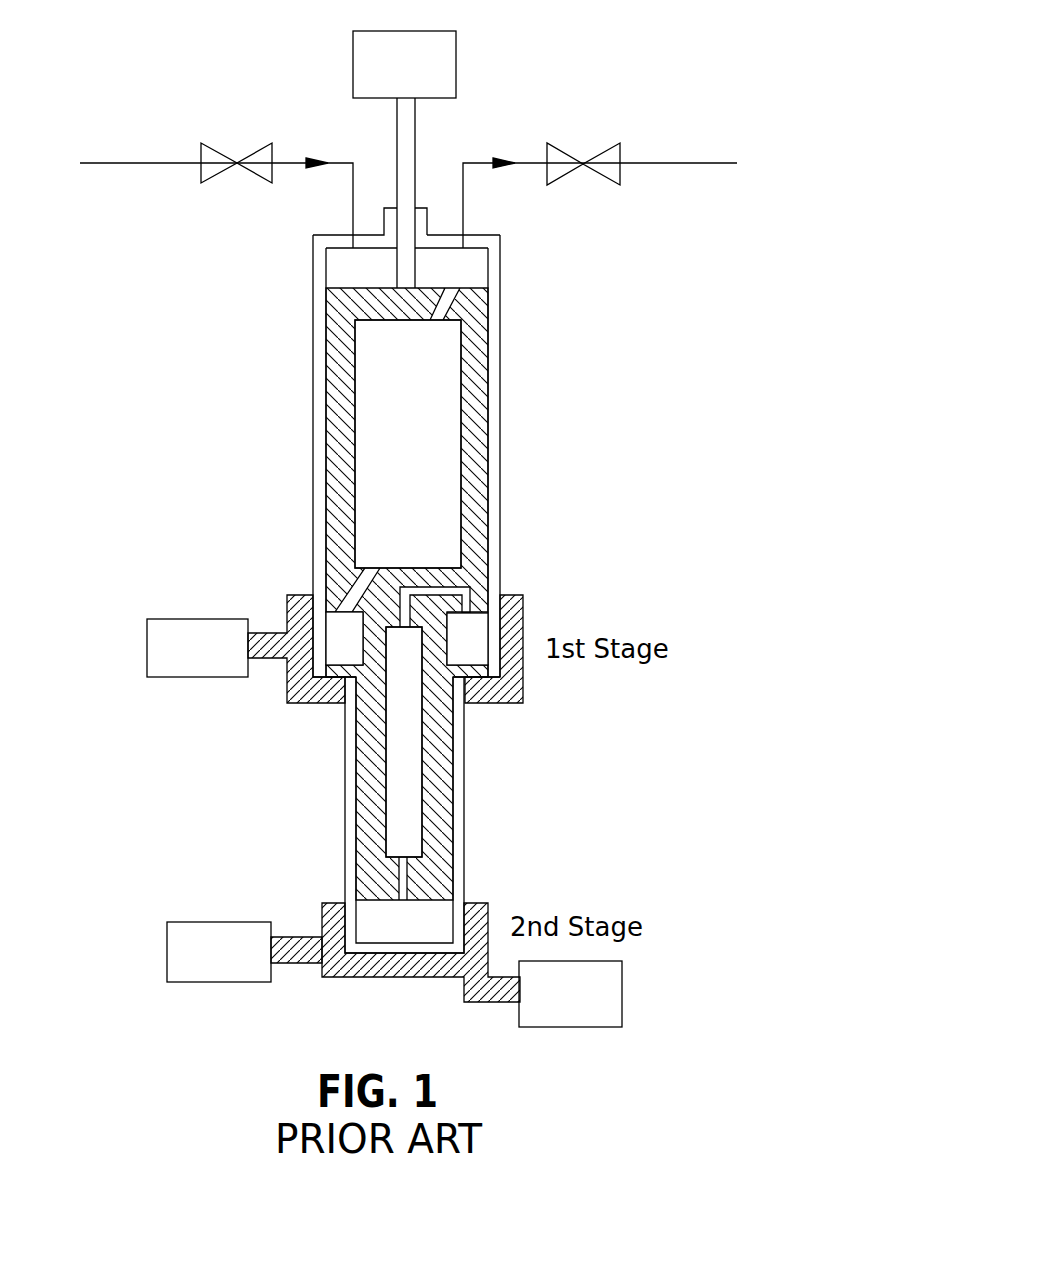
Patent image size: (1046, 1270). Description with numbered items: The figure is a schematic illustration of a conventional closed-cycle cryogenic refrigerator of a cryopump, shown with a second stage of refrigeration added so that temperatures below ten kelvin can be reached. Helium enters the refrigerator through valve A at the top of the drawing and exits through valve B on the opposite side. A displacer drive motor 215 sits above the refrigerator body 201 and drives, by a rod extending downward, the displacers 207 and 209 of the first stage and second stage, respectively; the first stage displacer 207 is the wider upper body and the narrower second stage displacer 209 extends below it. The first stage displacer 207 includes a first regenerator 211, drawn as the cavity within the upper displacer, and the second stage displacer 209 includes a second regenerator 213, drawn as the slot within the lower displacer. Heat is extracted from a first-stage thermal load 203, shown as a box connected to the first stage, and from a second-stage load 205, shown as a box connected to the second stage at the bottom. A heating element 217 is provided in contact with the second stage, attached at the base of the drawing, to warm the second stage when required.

The valve A is at (250, 153).
The valve B is at (604, 148).
The cylinder 201 is at (313, 412).
The first-stage thermal load 203 is at (147, 650).
The second-stage load 205 is at (167, 953).
The first stage displacer 207 is at (489, 402).
The second stage displacer 209 is at (453, 787).
The first regenerator 211 is at (443, 507).
The second regenerator 213 is at (405, 770).
The displacer drive motor 215 is at (456, 55).
The heating element 217 is at (622, 982).